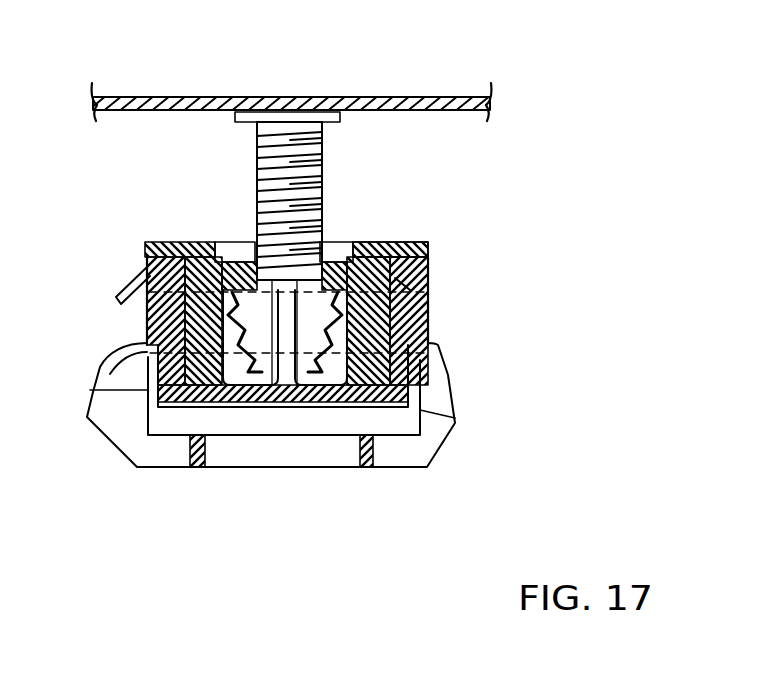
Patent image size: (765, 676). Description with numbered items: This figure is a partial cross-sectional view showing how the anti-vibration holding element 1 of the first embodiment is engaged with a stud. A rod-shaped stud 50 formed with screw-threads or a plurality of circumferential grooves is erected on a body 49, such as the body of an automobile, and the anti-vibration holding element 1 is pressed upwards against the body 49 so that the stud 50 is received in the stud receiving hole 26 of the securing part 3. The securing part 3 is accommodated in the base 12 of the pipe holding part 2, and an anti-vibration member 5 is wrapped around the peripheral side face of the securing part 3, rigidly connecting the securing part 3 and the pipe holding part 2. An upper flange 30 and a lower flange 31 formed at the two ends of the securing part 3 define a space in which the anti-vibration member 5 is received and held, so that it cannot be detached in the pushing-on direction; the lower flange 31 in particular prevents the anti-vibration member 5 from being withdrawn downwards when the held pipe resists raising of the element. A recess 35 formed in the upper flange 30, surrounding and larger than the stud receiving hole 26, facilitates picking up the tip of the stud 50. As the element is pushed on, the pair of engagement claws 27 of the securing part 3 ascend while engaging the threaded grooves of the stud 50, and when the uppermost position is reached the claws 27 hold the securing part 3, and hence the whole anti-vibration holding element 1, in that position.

The anti-vibration holding element 1 is at (146, 476).
The pipe holding part 2 is at (143, 309).
The securing part 3 is at (153, 241).
The anti-vibration member 5 is at (158, 270).
The base 12 is at (150, 413).
The stud receiving hole 26 is at (252, 300).
The engagement claws 27 is at (318, 375).
The upper flange 30 is at (413, 240).
The lower flange 31 is at (453, 428).
The recess 35 is at (350, 250).
The body 49 is at (198, 96).
The stud 50 is at (265, 168).